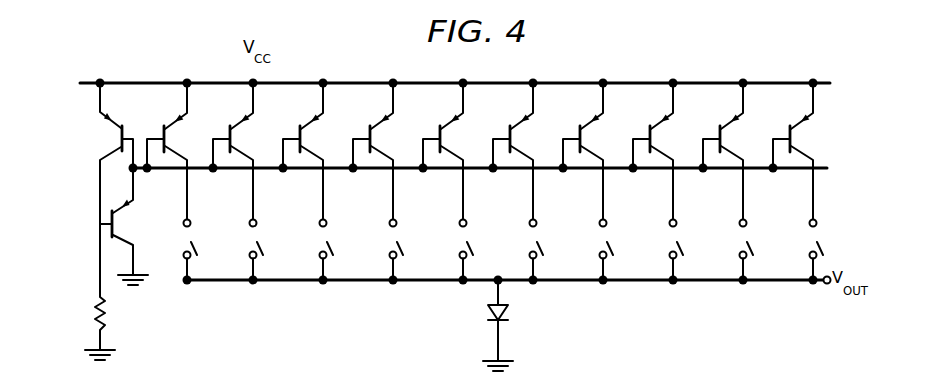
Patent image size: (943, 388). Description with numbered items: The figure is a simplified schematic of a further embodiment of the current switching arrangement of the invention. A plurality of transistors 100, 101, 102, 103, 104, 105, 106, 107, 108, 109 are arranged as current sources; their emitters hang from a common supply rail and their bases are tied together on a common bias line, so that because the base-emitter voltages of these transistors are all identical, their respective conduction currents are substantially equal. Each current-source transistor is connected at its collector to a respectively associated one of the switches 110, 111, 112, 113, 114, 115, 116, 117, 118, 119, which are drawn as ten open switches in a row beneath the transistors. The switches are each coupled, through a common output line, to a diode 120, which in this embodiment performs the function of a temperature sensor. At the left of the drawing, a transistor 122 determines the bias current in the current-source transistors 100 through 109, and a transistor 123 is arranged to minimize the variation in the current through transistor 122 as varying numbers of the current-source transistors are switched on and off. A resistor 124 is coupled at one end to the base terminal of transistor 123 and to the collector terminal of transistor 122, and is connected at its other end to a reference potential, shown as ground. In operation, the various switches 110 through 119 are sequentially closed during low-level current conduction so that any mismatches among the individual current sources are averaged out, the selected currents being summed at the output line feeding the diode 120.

The transistor 100 is at (166, 139).
The transistor 101 is at (232, 139).
The transistor 102 is at (302, 139).
The transistor 103 is at (372, 139).
The transistor 104 is at (442, 139).
The transistor 105 is at (512, 139).
The transistor 106 is at (582, 139).
The transistor 107 is at (652, 139).
The transistor 108 is at (722, 139).
The transistor 109 is at (792, 139).
The switch 110 is at (191, 242).
The switch 111 is at (257, 242).
The switch 112 is at (327, 242).
The switch 113 is at (397, 242).
The switch 114 is at (467, 242).
The switch 115 is at (537, 242).
The switch 116 is at (607, 242).
The switch 117 is at (677, 242).
The switch 118 is at (747, 242).
The switch 119 is at (817, 242).
The diode 120 is at (506, 312).
The transistor 122 is at (120, 140).
The transistor 123 is at (114, 225).
The resistor 124 is at (110, 315).